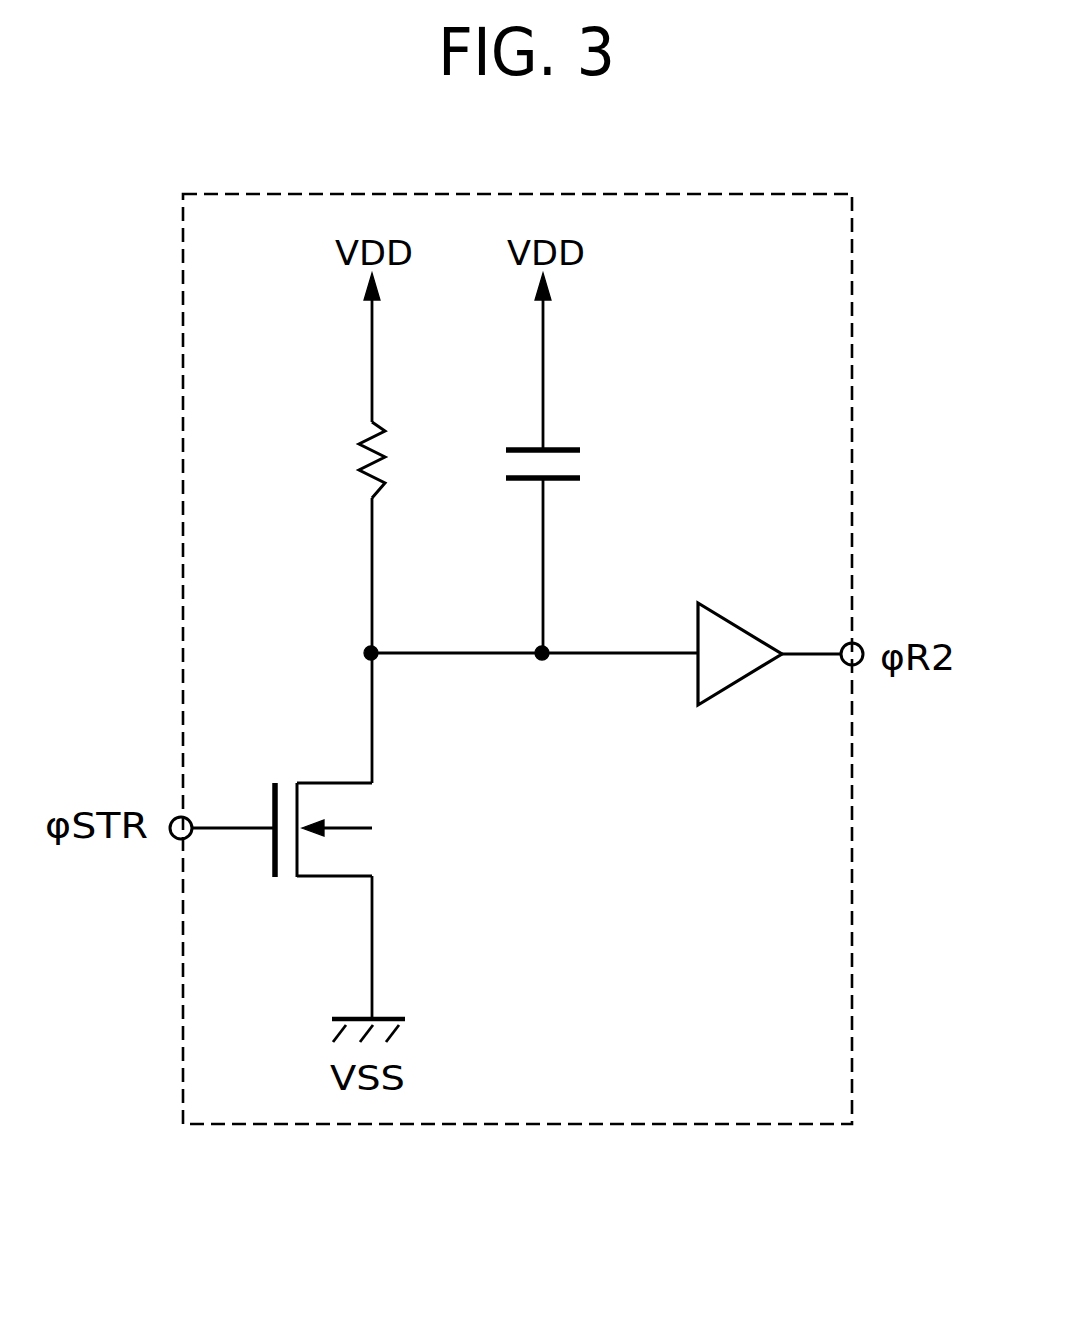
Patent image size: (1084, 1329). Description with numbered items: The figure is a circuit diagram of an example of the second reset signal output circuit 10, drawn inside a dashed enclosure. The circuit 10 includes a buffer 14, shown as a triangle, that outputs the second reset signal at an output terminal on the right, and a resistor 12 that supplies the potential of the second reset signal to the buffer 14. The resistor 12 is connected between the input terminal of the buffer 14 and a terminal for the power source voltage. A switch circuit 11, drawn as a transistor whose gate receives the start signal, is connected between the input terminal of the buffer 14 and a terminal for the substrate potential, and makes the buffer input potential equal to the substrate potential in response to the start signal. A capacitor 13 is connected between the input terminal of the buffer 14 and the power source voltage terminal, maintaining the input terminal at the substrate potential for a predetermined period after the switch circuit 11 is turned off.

The second reset signal output circuit 10 is at (526, 1124).
The switch circuit 11 is at (303, 770).
The resistor 12 is at (350, 464).
The capacitor 13 is at (585, 465).
The buffer 14 is at (740, 683).